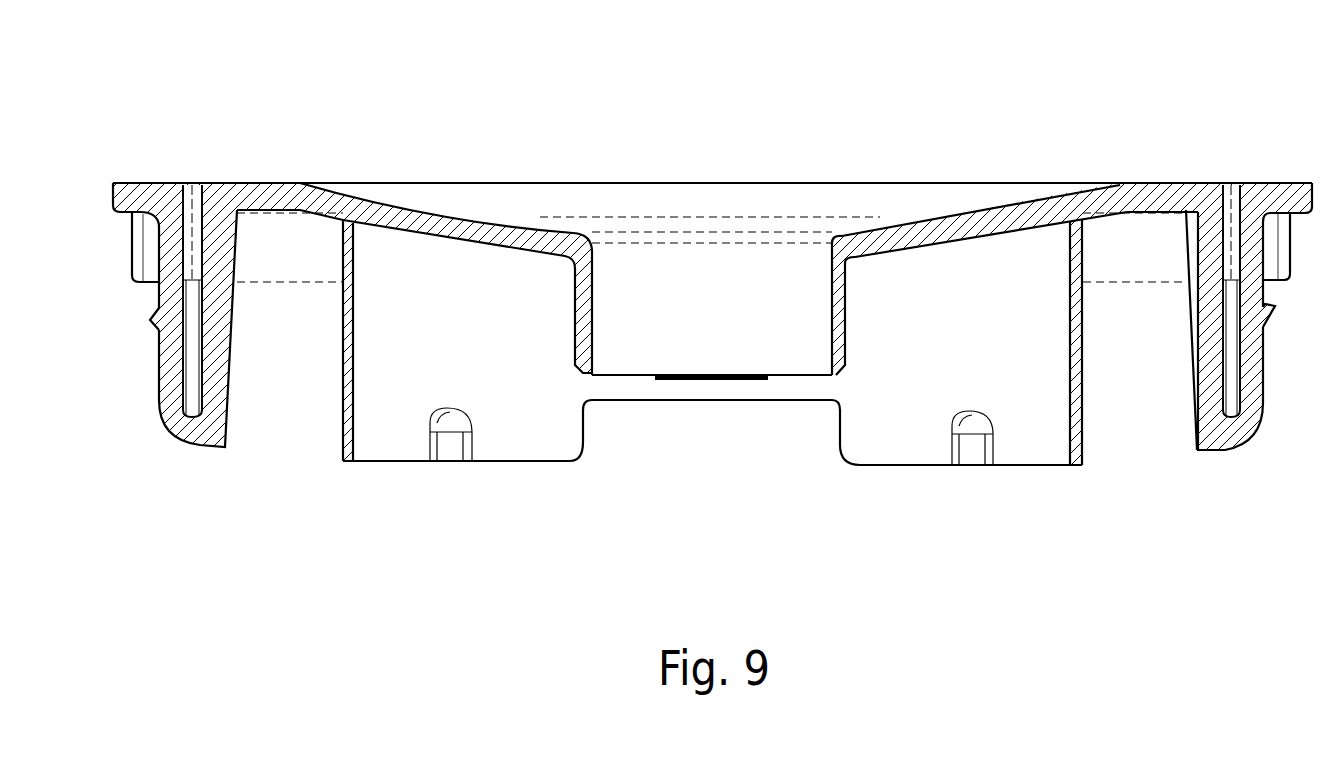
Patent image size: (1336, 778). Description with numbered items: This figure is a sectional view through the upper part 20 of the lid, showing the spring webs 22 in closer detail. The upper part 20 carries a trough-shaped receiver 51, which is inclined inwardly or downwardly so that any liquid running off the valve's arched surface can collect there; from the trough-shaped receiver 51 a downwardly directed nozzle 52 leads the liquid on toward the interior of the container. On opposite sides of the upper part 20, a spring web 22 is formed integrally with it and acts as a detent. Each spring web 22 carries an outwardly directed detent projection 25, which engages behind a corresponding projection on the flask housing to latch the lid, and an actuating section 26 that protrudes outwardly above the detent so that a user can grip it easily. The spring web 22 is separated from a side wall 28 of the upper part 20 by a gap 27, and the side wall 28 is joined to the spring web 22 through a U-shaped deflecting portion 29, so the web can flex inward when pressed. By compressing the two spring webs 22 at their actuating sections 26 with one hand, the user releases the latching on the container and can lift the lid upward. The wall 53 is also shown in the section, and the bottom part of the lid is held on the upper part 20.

The upper part 20 is at (1110, 203).
The spring web 22 is at (172, 255).
The detent projection 25 is at (152, 318).
The actuating section 26 is at (128, 203).
The gap 27 is at (1233, 177).
The side wall 28 is at (1215, 330).
The U-shaped deflecting portion 29 is at (1238, 422).
The trough-shaped receiver 51 is at (972, 230).
The nozzle 52 is at (837, 240).
The wall 53 is at (1077, 432).